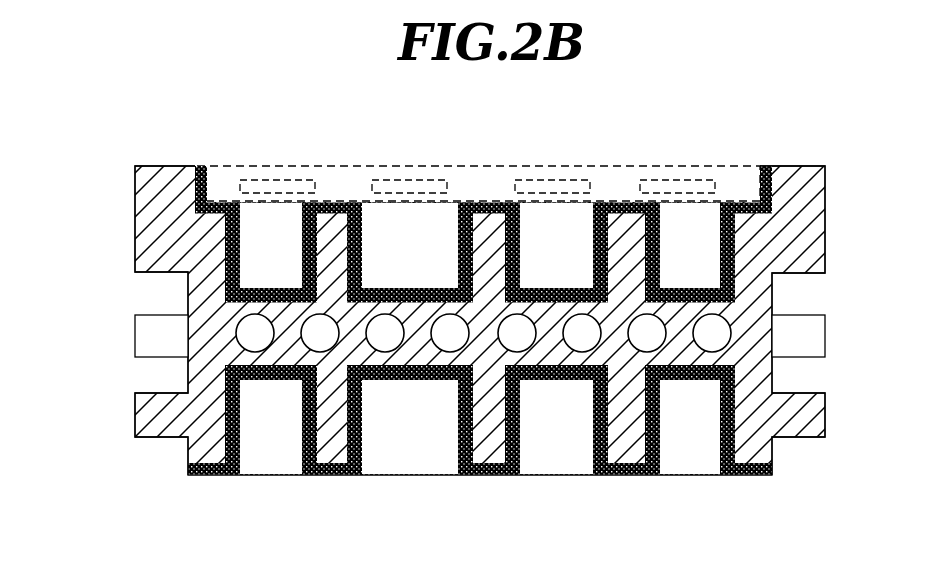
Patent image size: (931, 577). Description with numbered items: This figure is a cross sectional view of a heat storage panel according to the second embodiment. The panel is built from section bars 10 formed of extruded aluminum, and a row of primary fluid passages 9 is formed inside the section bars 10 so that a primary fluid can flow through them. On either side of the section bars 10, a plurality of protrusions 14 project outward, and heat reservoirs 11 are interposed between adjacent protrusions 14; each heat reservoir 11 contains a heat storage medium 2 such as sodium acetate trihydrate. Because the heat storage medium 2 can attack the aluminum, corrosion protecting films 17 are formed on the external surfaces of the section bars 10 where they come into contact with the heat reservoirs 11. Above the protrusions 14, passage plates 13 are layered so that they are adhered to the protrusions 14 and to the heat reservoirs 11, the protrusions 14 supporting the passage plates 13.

The section bar 10 is at (135, 218).
The passage plate 13 is at (502, 165).
The heat reservoir 11 is at (683, 205).
The heat storage medium 2 is at (700, 227).
The corrosion protecting film 17 is at (300, 445).
The primary fluid passage 9 is at (440, 342).
The protrusion 14 is at (486, 448).